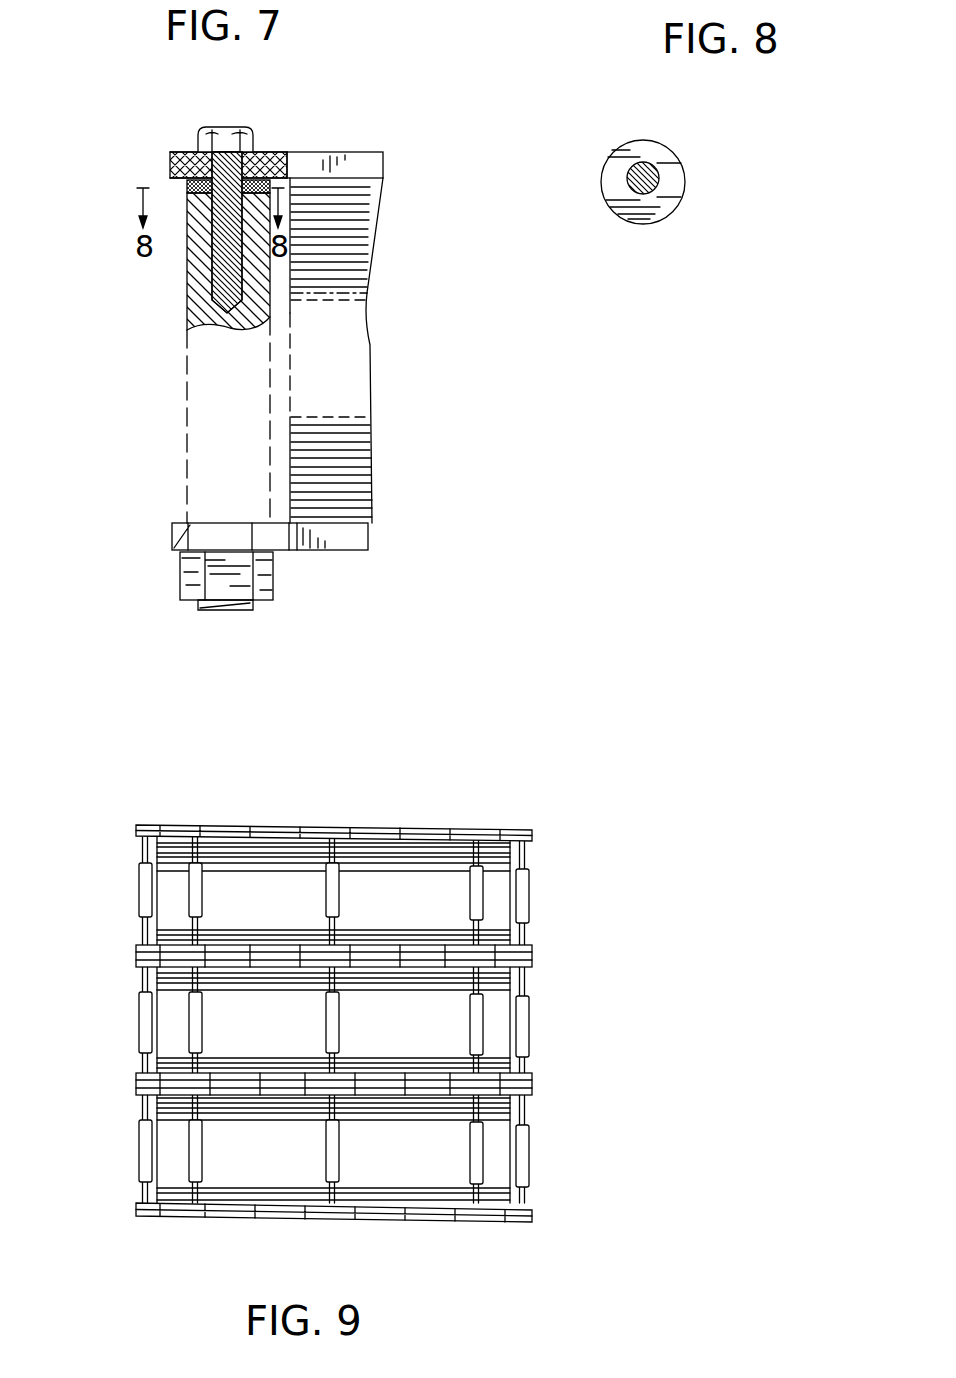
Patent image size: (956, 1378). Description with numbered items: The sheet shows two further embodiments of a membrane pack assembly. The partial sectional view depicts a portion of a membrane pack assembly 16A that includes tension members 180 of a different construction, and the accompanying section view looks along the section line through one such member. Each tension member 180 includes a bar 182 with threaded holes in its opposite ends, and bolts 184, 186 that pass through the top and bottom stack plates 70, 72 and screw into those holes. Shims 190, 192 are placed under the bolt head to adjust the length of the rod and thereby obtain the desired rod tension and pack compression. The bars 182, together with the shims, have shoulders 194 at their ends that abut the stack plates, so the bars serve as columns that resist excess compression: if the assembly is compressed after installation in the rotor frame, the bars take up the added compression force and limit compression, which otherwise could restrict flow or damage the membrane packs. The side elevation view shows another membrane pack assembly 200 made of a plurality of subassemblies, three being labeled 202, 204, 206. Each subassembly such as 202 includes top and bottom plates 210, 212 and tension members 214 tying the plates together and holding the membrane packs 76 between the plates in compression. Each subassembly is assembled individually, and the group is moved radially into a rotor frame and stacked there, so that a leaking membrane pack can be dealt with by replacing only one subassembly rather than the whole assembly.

In FIG. 7, the top stack plate 70 is at (377, 152).
In FIG. 7, the bottom stack plate 72 is at (350, 552).
In FIG. 9, the membrane packs 76 is at (143, 843).
In FIG. 7, the membrane pack assembly 16A is at (392, 259).
In FIG. 7, the tension member 180 is at (176, 322).
In FIG. 7, the bar 182 is at (187, 273).
In FIG. 8, the bar 182 is at (684, 183).
In FIG. 7, the bolt 184 is at (248, 151).
In FIG. 8, the bolt 184 is at (648, 164).
In FIG. 7, the bolt 186 is at (180, 598).
In FIG. 7, the shim 190 is at (190, 186).
In FIG. 8, the shim 190 is at (634, 218).
In FIG. 7, the shim 192 is at (188, 157).
In FIG. 7, the shoulders 194 is at (287, 160).
In FIG. 9, the membrane pack assembly 200 is at (582, 1192).
In FIG. 9, the subassembly 202 is at (562, 878).
In FIG. 9, the subassembly 204 is at (562, 1027).
In FIG. 9, the subassembly 206 is at (564, 1148).
In FIG. 9, the top plate 210 is at (535, 834).
In FIG. 9, the bottom plate 212 is at (531, 955).
In FIG. 9, the tension members 214 is at (531, 907).